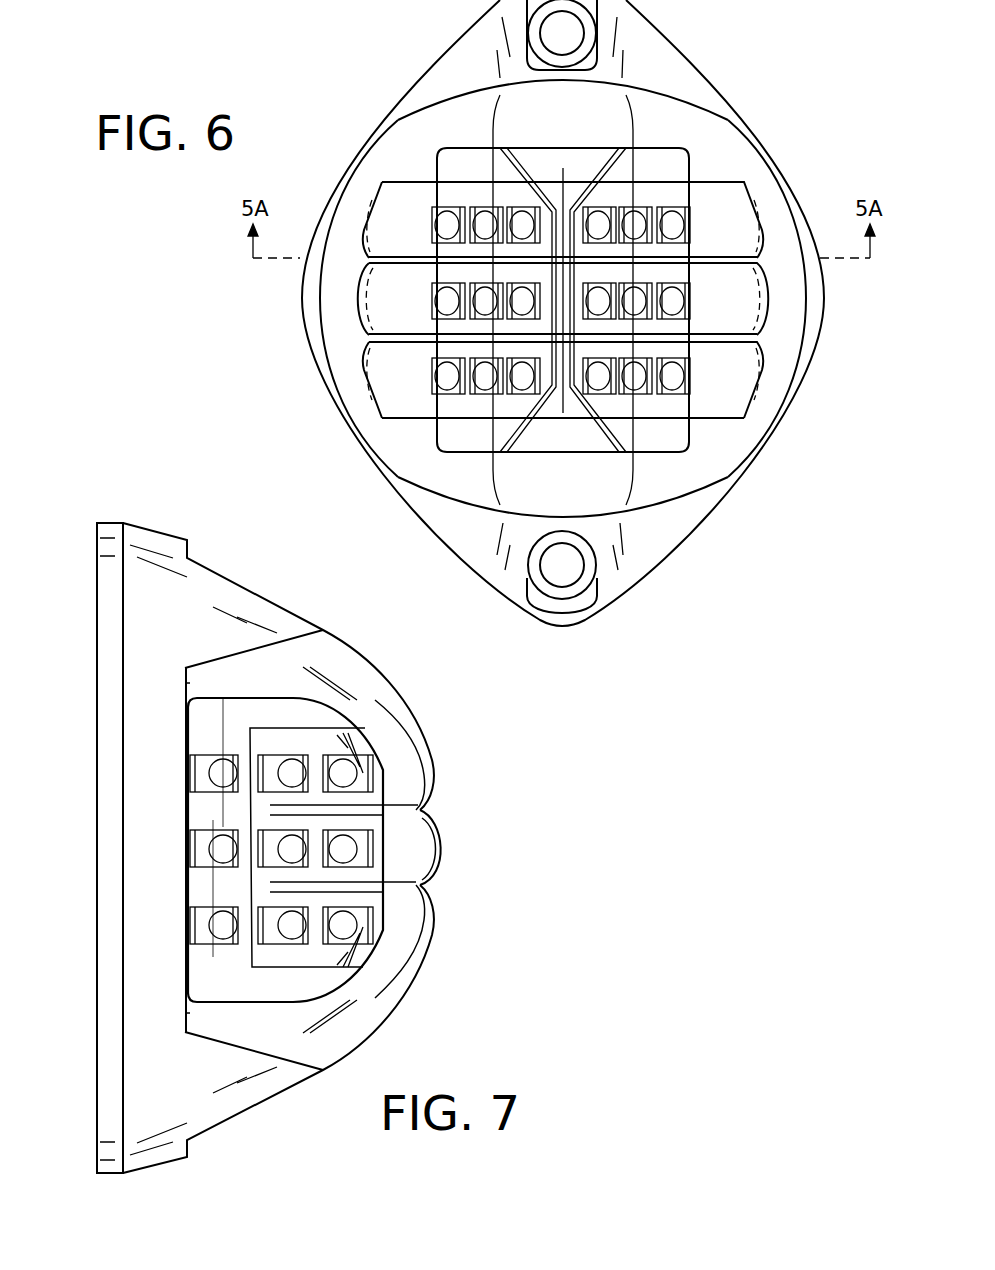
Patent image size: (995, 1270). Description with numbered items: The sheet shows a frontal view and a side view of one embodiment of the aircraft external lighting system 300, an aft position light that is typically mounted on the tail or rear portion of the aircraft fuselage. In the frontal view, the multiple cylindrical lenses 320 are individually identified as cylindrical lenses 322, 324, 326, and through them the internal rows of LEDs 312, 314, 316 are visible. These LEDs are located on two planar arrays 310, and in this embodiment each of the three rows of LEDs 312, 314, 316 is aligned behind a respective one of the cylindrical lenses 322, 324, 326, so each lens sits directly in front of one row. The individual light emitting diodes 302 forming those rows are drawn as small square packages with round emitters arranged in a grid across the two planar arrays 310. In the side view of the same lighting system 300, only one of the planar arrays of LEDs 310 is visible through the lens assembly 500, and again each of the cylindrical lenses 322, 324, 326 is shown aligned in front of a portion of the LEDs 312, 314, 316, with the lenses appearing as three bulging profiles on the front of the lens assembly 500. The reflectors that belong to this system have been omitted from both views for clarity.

In FIG. 6, the aircraft external lighting system 300 is at (287, 63).
In FIG. 7, the aircraft external lighting system 300 is at (570, 849).
In FIG. 6, the light emitting diodes 302 is at (598, 295).
In FIG. 7, the light emitting diodes 302 is at (222, 940).
In FIG. 6, the planar arrays 310 is at (618, 435).
In FIG. 7, the planar arrays 310 is at (366, 729).
In FIG. 6, the row of LEDs 312 is at (432, 226).
In FIG. 7, the row of LEDs 312 is at (188, 772).
In FIG. 6, the row of LEDs 314 is at (432, 301).
In FIG. 7, the row of LEDs 314 is at (188, 851).
In FIG. 6, the row of LEDs 316 is at (432, 377).
In FIG. 7, the row of LEDs 316 is at (188, 922).
In FIG. 6, the cylindrical lenses 320 is at (725, 416).
In FIG. 6, the cylindrical lens 322 is at (760, 243).
In FIG. 7, the cylindrical lens 322 is at (432, 790).
In FIG. 6, the cylindrical lens 324 is at (767, 298).
In FIG. 7, the cylindrical lens 324 is at (442, 862).
In FIG. 6, the cylindrical lens 326 is at (760, 353).
In FIG. 7, the cylindrical lens 326 is at (432, 922).
In FIG. 6, the lens assembly 500 is at (376, 414).
In FIG. 7, the lens assembly 500 is at (432, 761).